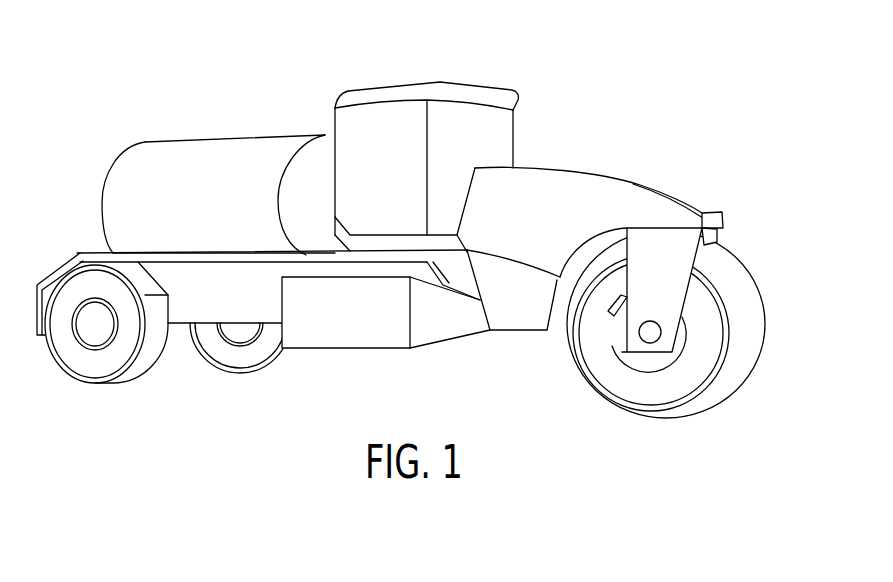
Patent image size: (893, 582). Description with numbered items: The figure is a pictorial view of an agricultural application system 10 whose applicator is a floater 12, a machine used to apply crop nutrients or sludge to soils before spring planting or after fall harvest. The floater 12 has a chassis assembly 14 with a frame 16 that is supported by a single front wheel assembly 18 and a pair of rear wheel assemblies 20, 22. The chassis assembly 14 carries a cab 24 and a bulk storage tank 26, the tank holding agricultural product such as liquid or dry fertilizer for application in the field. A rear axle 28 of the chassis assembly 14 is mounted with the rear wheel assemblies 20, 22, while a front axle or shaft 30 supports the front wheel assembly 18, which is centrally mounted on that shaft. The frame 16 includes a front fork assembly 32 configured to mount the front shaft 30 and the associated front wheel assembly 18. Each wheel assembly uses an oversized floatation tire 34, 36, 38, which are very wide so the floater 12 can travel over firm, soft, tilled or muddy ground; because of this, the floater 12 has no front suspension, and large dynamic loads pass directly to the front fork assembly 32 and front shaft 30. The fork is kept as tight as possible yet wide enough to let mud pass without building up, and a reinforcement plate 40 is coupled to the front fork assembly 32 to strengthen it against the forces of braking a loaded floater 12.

The agricultural application system 10 is at (612, 80).
The floater 12 is at (705, 170).
The chassis assembly 14 is at (503, 348).
The frame 16 is at (266, 291).
The front wheel assembly 18 is at (690, 345).
The rear wheel assembly 20 is at (112, 359).
The rear wheel assembly 22 is at (253, 388).
The cab 24 is at (345, 133).
The bulk storage tank 26 is at (186, 212).
The rear axle 28 is at (93, 336).
The front axle or shaft 30 is at (650, 340).
The front fork assembly 32 is at (674, 244).
The floatation tire 34 is at (747, 317).
The floatation tire 36 is at (158, 337).
The floatation tire 38 is at (290, 353).
The reinforcement plate 40 is at (623, 326).